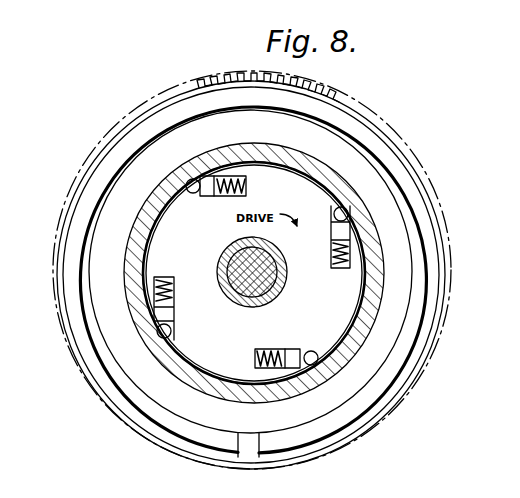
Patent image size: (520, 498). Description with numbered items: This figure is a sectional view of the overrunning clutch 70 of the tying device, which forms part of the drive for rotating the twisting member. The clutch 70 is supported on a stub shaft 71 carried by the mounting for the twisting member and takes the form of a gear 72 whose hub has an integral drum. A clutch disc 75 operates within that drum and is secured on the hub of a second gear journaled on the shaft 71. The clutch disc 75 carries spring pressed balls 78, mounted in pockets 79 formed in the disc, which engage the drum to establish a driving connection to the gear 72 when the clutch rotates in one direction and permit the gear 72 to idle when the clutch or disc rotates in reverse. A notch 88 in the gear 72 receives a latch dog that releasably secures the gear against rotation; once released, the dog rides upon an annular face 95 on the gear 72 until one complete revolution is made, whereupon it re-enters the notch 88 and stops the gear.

The clutch 70 is at (406, 137).
The stub shaft 71 is at (257, 262).
The gear 72 is at (325, 89).
The clutch disc 75 is at (277, 182).
The spring pressed balls 78 is at (196, 197).
The pockets 79 is at (180, 197).
The notch 88 is at (248, 443).
The annular face 95 is at (418, 339).